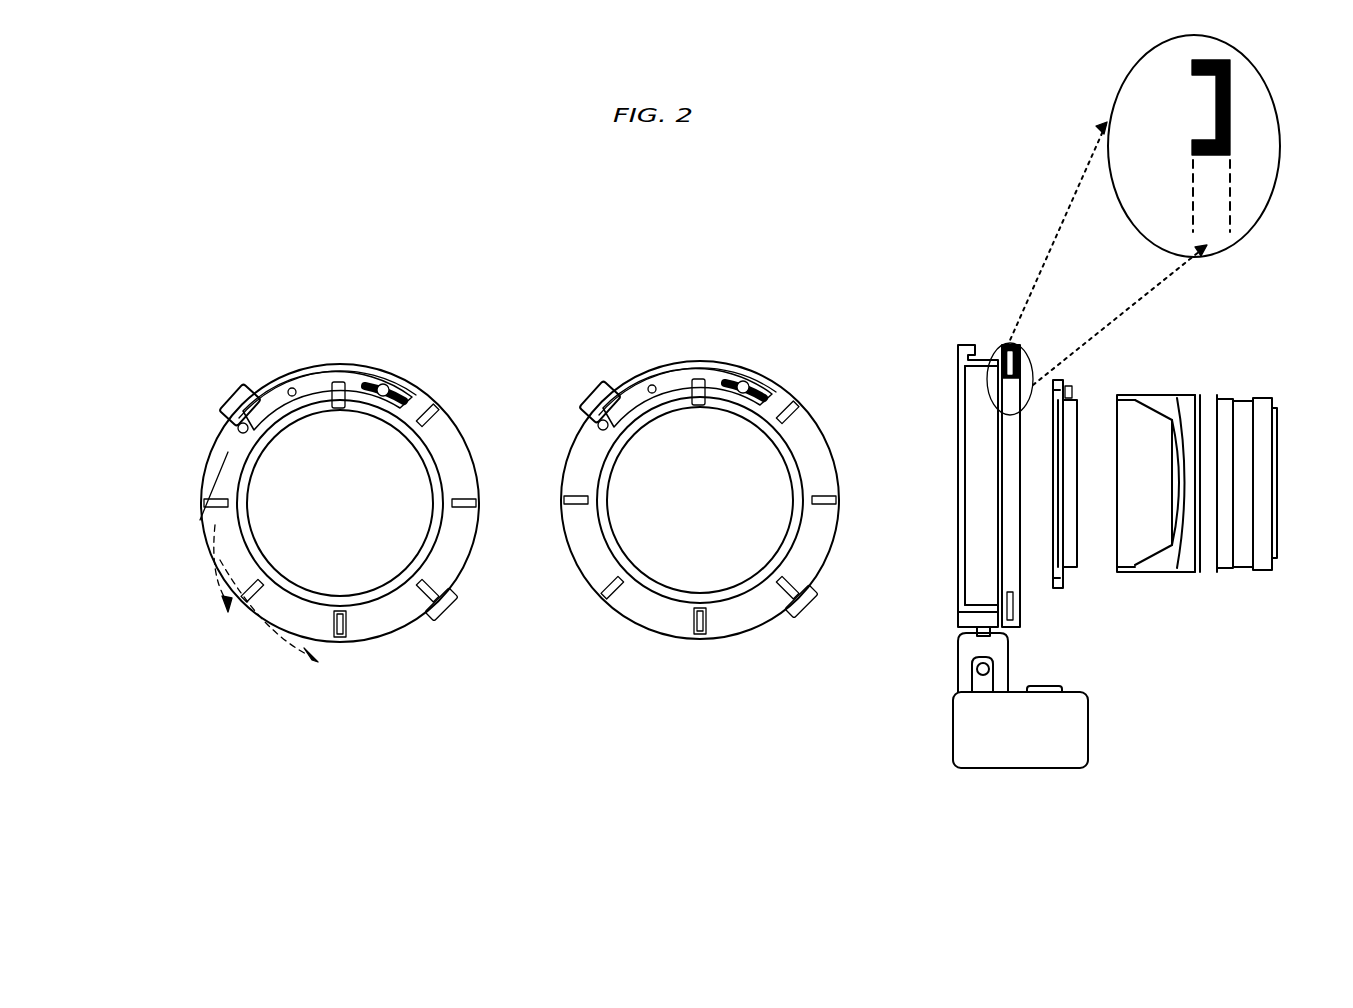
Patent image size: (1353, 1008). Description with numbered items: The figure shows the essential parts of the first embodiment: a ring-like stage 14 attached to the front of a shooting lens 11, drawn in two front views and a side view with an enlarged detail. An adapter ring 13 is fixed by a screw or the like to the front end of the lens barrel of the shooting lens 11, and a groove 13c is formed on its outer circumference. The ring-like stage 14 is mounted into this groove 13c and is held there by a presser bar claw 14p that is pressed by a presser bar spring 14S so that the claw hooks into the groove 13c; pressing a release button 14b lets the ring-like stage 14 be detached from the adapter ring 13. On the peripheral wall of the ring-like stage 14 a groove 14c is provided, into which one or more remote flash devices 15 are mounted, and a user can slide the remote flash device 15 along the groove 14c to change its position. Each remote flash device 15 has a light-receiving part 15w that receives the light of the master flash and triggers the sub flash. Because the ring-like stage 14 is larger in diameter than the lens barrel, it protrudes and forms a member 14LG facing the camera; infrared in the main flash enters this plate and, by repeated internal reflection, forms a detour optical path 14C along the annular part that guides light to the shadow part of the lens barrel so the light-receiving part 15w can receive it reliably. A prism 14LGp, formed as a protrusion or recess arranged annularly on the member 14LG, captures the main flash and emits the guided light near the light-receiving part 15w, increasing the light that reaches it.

The ring-like stage 14 is at (962, 345).
The member 14LG is at (460, 548).
The prism 14LGp is at (875, 423).
The release button 14b is at (238, 383).
The presser bar claw 14p is at (698, 390).
The presser bar spring 14S is at (778, 345).
The detour optical path 14C is at (215, 487).
The groove 14c is at (972, 345).
The adapter ring 13 is at (1070, 400).
The groove 13c is at (1072, 395).
The shooting lens 11 is at (1163, 562).
The remote flash device 15 is at (1013, 755).
The light-receiving part 15w is at (1063, 688).